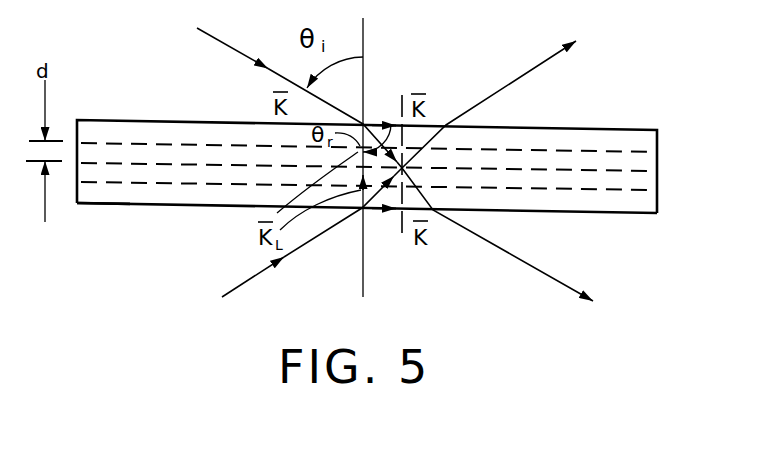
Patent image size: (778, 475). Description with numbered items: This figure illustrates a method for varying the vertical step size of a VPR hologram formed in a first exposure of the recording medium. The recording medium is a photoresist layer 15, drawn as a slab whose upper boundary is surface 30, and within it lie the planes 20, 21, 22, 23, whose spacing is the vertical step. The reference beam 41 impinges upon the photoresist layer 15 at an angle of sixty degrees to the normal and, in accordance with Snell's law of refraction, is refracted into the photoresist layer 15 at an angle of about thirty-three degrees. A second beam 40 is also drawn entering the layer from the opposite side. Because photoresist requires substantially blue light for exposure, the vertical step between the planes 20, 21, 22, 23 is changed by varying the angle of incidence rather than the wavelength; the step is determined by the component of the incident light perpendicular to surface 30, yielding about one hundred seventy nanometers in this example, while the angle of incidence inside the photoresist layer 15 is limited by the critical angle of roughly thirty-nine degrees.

The photoresist layer 15 is at (103, 205).
The plane 20 is at (658, 141).
The plane 21 is at (658, 162).
The plane 22 is at (658, 183).
The plane 23 is at (658, 203).
The surface of photoresist layer 30 is at (605, 129).
The light beam 40 is at (251, 279).
The reference beam 41 is at (227, 47).